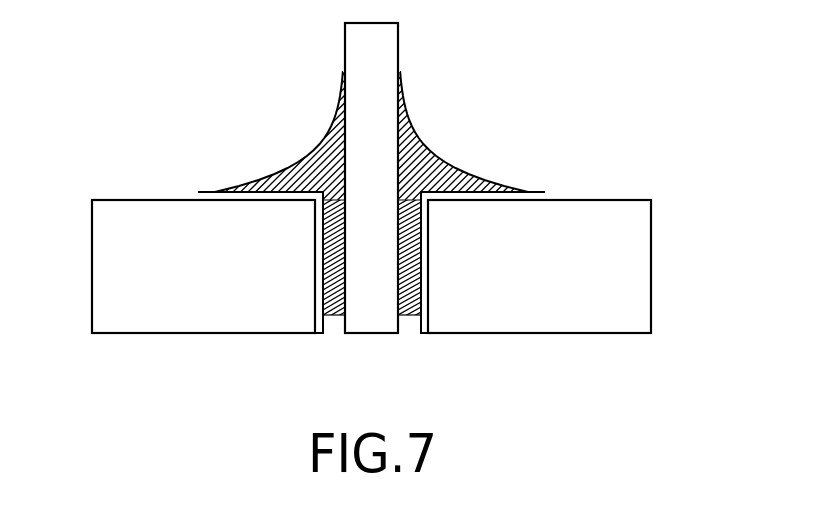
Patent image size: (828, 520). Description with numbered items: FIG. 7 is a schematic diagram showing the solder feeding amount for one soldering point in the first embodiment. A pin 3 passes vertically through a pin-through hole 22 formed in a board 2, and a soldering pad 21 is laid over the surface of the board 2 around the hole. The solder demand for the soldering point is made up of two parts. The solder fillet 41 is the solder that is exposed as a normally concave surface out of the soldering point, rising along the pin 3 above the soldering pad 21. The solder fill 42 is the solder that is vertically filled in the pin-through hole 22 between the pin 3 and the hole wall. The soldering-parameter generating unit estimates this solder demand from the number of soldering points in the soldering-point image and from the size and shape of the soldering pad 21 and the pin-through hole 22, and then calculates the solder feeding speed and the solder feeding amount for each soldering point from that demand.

The substrate block 2 is at (168, 305).
The soldering pad 21 is at (258, 198).
The pin-through hole 22 is at (412, 340).
The post / pin 3 is at (378, 53).
The solder fillet 41 is at (323, 152).
The solder fill 42 is at (333, 307).